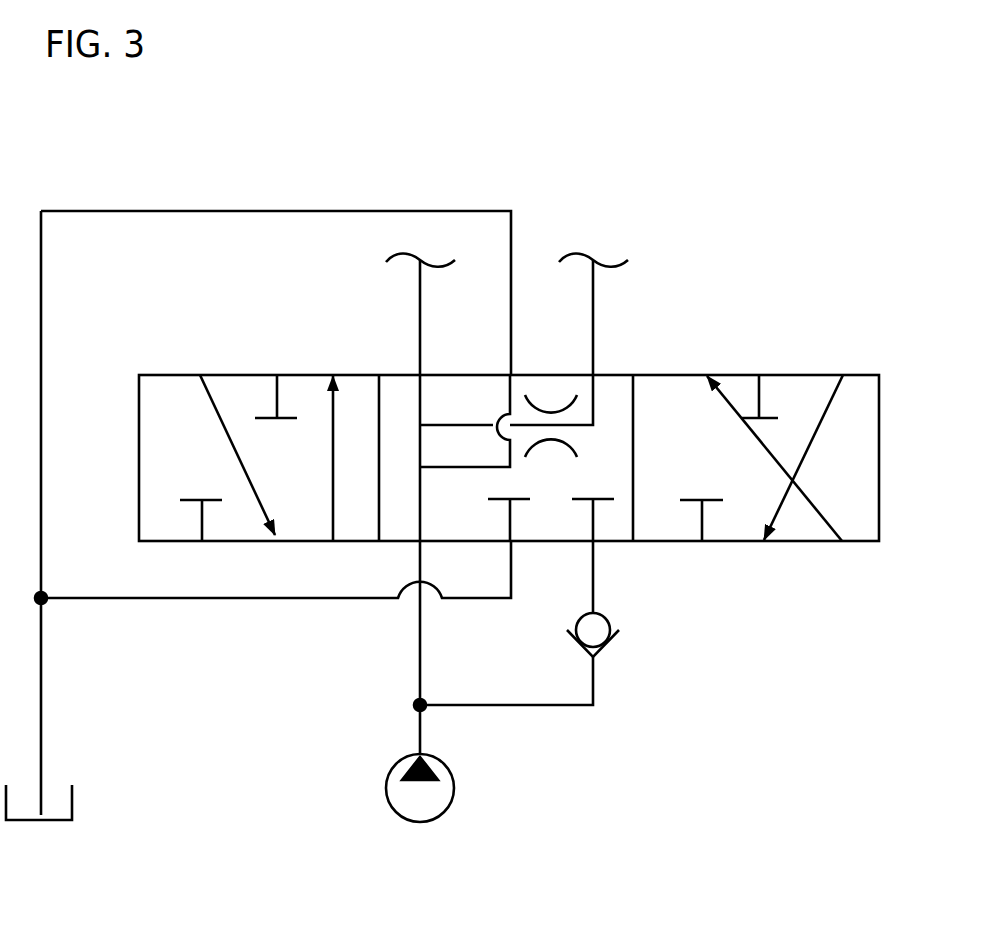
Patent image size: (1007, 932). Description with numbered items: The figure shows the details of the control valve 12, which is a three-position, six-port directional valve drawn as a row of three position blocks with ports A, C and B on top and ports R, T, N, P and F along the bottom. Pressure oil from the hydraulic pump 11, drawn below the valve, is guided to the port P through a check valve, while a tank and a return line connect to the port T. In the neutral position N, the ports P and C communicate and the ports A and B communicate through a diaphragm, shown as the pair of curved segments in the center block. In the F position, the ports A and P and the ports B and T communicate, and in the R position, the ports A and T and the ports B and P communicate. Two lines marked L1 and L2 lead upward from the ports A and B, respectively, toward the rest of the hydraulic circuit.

The hydraulic pump 11 is at (453, 771).
The control valve 12 is at (840, 306).
The hydraulic line L1 is at (420, 296).
The hydraulic line L2 is at (593, 305).